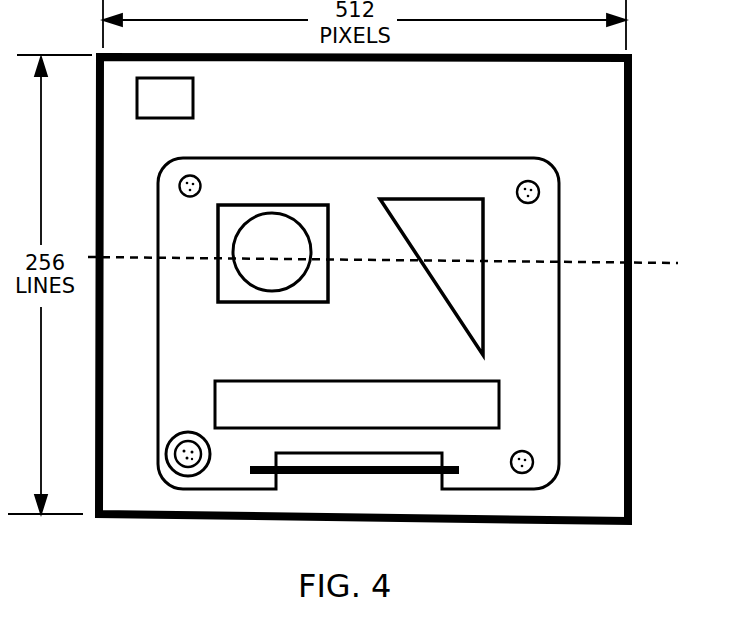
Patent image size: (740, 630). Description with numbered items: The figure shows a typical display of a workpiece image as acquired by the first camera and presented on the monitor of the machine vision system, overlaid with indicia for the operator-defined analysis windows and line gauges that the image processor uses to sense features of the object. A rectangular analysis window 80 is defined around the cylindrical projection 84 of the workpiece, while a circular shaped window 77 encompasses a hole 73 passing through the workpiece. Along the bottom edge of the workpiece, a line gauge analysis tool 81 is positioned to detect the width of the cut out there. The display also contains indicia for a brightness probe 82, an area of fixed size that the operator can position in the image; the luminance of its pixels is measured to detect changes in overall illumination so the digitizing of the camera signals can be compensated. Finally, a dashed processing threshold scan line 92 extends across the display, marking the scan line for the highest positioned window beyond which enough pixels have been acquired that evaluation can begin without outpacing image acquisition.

The hole 73 is at (187, 467).
The circular shaped window 77 is at (173, 478).
The rectangular analysis window 80 is at (313, 303).
The line gauge analysis tool 81 is at (302, 473).
The brightness probe 82 is at (137, 107).
The cylindrical projection 84 is at (250, 290).
The processing threshold scan line 92 is at (652, 260).